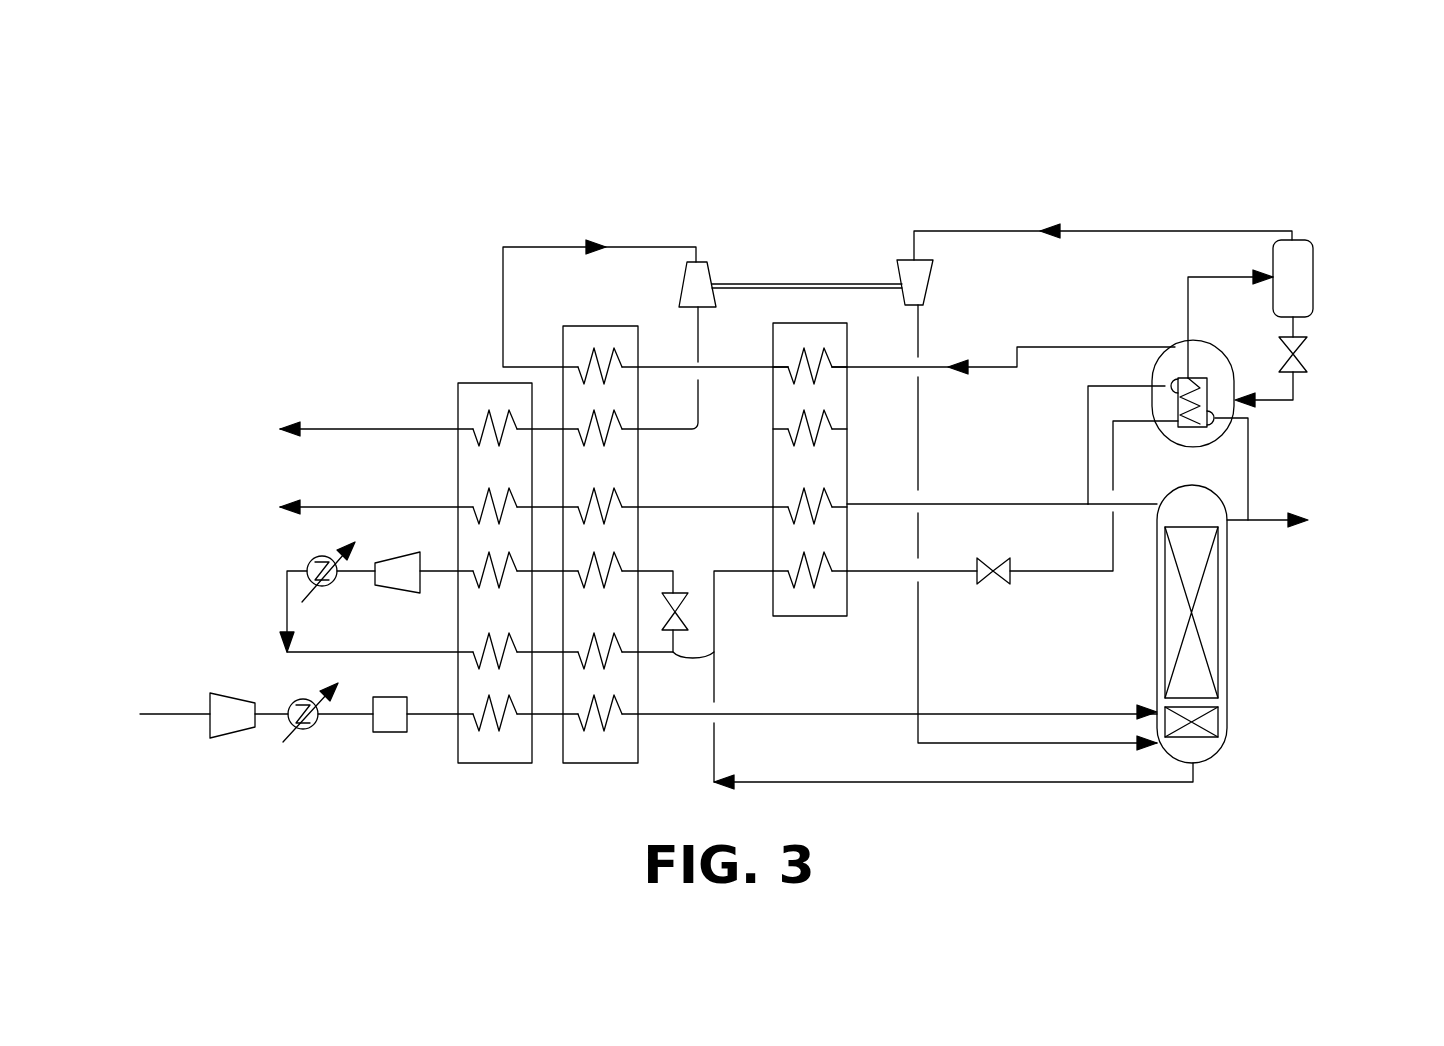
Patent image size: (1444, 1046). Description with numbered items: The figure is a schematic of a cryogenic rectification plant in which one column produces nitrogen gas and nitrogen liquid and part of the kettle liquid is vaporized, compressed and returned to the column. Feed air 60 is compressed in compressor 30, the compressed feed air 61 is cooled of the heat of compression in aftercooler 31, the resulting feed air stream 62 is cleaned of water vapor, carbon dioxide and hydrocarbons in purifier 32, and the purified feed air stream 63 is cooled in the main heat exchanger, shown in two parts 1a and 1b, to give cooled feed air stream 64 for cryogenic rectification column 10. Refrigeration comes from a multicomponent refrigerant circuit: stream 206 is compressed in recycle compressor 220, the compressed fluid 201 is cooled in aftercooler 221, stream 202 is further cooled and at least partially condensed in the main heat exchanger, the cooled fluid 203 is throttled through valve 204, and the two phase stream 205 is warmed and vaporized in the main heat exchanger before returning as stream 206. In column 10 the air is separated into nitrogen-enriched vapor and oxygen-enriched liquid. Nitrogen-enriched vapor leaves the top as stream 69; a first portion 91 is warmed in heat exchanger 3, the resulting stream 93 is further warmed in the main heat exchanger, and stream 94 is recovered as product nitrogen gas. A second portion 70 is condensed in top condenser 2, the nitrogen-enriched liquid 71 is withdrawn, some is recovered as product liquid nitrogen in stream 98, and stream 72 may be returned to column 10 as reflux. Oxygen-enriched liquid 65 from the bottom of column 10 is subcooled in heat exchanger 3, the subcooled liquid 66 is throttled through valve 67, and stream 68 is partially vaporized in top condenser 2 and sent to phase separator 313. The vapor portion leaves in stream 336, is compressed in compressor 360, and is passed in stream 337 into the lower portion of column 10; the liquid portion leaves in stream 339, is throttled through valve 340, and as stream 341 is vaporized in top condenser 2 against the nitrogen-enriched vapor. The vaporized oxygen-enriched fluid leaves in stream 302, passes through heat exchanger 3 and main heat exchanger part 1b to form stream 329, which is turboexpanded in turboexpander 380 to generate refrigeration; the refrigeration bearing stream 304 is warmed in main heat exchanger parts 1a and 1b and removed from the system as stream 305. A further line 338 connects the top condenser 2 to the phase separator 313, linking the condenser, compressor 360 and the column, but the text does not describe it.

The feed air 60 is at (170, 727).
The compressor 30 is at (228, 740).
The compressed feed air 61 is at (273, 727).
The aftercooler 31 is at (292, 700).
The feed air stream 62 is at (345, 727).
The purifier 32 is at (390, 697).
The purified feed air stream 63 is at (440, 727).
The main heat exchanger part 1a is at (473, 383).
The main heat exchanger part 1b is at (590, 326).
The heat exchanger 3 is at (850, 478).
The stream 305 is at (388, 429).
The refrigeration bearing stream 304 is at (702, 425).
The stream 94 is at (375, 507).
The stream 93 is at (688, 507).
The first portion of nitrogen-enriched vapor 91 is at (978, 504).
The nitrogen-enriched vapor stream 69 is at (1132, 502).
The stream 329 is at (545, 247).
The turboexpander 380 is at (710, 272).
The compressor 360 is at (896, 266).
The stream 302 is at (1038, 355).
The aftercooler 221 is at (298, 566).
The multicomponent refrigerant fluid stream 202 is at (325, 588).
The compressed multicomponent refrigerant fluid 201 is at (357, 573).
The recycle compressor 220 is at (390, 556).
The multicomponent refrigerant fluid stream 206 is at (437, 575).
The refrigeration bearing multicomponent two phase refrigerant fluid stream 205 is at (672, 592).
The cooled, compressed multicomponent refrigerant fluid 203 is at (714, 655).
The valve 204 is at (698, 583).
The subcooled oxygen-enriched liquid 66 is at (942, 574).
The valve 67 is at (997, 580).
The oxygen-enriched liquid stream 68 is at (1057, 574).
The second portion of nitrogen-enriched vapor 70 is at (1085, 462).
The cooled feed air stream 64 is at (773, 710).
The oxygen-enriched liquid stream 65 is at (773, 782).
The stream 337 is at (1030, 782).
The cryogenic rectification column 10 is at (1157, 656).
The nitrogen-enriched liquid stream 72 is at (1240, 525).
The product liquid nitrogen stream 98 is at (1285, 522).
The nitrogen-enriched liquid stream 71 is at (1250, 462).
The top condenser 2 is at (1178, 350).
The stream 338 is at (1213, 276).
The stream 336 is at (1115, 230).
The phase separator 313 is at (1313, 262).
The stream 339 is at (1300, 332).
The valve 340 is at (1307, 352).
The stream 341 is at (1293, 402).